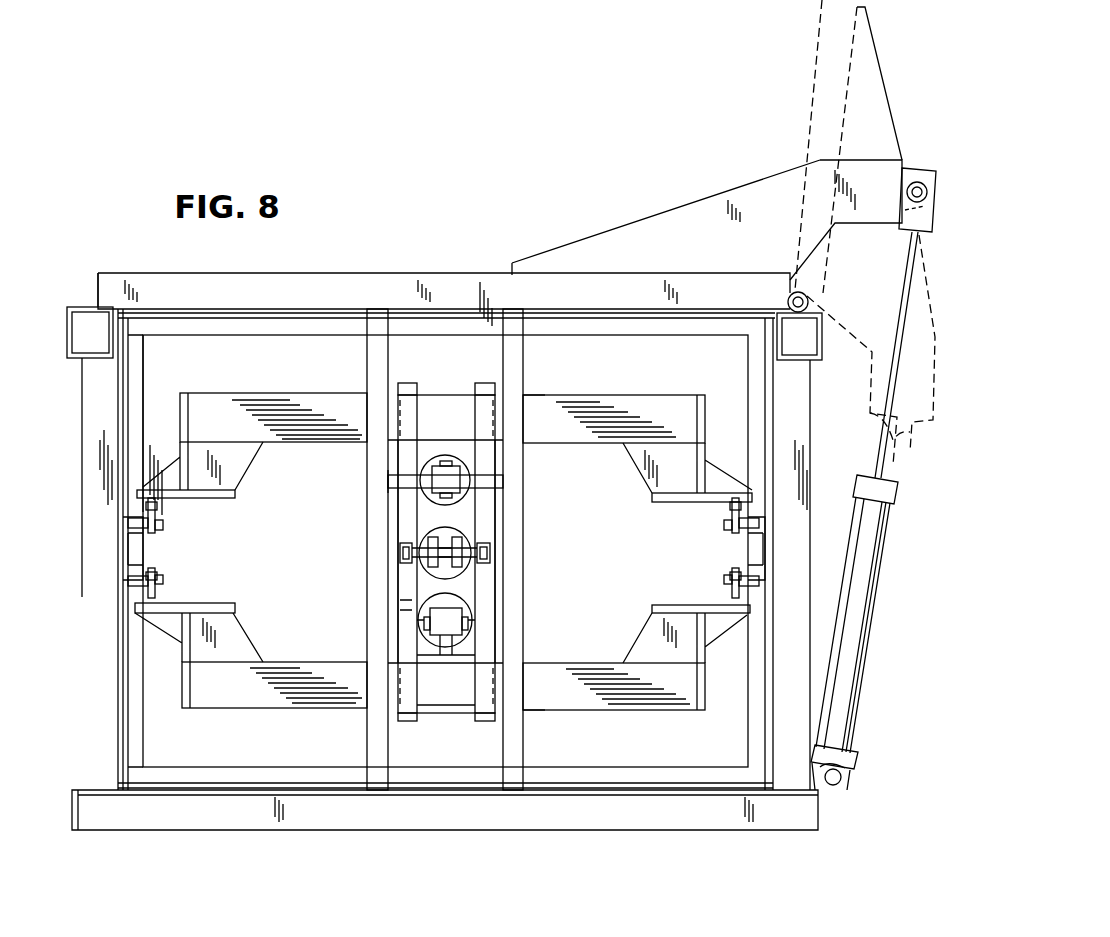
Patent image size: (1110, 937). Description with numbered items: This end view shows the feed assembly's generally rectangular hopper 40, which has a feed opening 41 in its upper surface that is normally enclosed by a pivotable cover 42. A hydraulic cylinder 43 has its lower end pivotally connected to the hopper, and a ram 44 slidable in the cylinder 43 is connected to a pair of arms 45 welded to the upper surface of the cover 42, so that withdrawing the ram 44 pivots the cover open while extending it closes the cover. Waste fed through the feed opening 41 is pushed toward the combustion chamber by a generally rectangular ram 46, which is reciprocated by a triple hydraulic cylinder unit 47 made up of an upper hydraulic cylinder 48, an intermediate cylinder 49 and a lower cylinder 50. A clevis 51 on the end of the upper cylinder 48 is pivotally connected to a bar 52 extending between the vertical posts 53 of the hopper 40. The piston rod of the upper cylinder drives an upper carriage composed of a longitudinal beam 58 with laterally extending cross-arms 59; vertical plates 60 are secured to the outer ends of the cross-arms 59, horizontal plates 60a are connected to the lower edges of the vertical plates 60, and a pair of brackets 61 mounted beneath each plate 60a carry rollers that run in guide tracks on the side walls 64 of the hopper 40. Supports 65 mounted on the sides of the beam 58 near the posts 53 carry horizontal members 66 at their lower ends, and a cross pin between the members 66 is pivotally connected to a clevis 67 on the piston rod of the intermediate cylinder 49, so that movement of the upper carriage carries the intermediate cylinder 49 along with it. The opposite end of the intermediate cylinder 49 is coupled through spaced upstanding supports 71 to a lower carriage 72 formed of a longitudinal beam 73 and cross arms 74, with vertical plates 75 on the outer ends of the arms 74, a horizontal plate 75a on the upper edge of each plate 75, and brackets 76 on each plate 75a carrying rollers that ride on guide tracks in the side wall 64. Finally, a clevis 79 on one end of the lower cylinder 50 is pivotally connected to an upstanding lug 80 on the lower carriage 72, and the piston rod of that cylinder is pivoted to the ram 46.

The hopper 40 is at (80, 418).
The feed opening 41 is at (183, 320).
The pivotable cover 42 is at (458, 282).
The hydraulic cylinder 43 is at (868, 550).
The ram 44 is at (903, 283).
The arms 45 is at (767, 190).
The ram 46 is at (650, 569).
The triple hydraulic cylinder unit 47 is at (546, 390).
The upper hydraulic cylinder 48 is at (462, 467).
The intermediate cylinder 49 is at (467, 542).
The lower cylinder 50 is at (460, 602).
The clevis 51 is at (445, 462).
The bar 52 is at (397, 482).
The vertical posts 53 is at (370, 470).
The longitudinal beam 58 is at (448, 393).
The cross-arms 59 is at (328, 403).
The vertical plates 60 is at (178, 403).
The horizontal plates 60a is at (220, 500).
The brackets 61 is at (157, 513).
The side walls 64 is at (100, 593).
The supports 65 is at (403, 525).
The horizontal members 66 is at (403, 553).
The clevis 67 is at (432, 563).
The upstanding supports 71 is at (403, 605).
The lower carriage 72 is at (542, 720).
The longitudinal beam 73 is at (447, 702).
The cross arms 74 is at (265, 700).
The vertical plates 75 is at (183, 693).
The horizontal plate 75a is at (223, 603).
The brackets 76 is at (153, 566).
The clevis 79 is at (460, 623).
The upstanding lug 80 is at (447, 647).